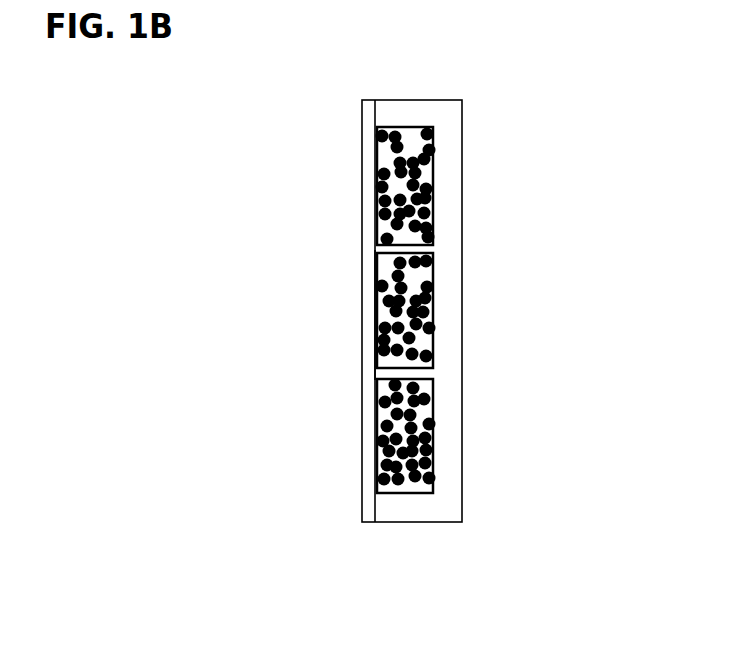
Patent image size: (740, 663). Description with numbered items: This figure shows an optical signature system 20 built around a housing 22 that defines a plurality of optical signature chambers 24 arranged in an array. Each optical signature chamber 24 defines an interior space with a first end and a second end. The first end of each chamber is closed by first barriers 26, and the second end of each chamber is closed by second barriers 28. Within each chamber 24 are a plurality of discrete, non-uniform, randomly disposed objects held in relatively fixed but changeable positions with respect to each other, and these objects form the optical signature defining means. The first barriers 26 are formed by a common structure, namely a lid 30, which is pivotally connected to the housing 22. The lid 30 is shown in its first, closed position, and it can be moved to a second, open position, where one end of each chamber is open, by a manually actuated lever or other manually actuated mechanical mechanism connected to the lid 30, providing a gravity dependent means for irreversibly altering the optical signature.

The optical signature system 20 is at (527, 98).
The housing 22 is at (445, 523).
The optical signature chamber 24 is at (440, 445).
The first barrier 26 is at (363, 182).
The second barrier 28 is at (447, 203).
The lid 30 is at (360, 325).